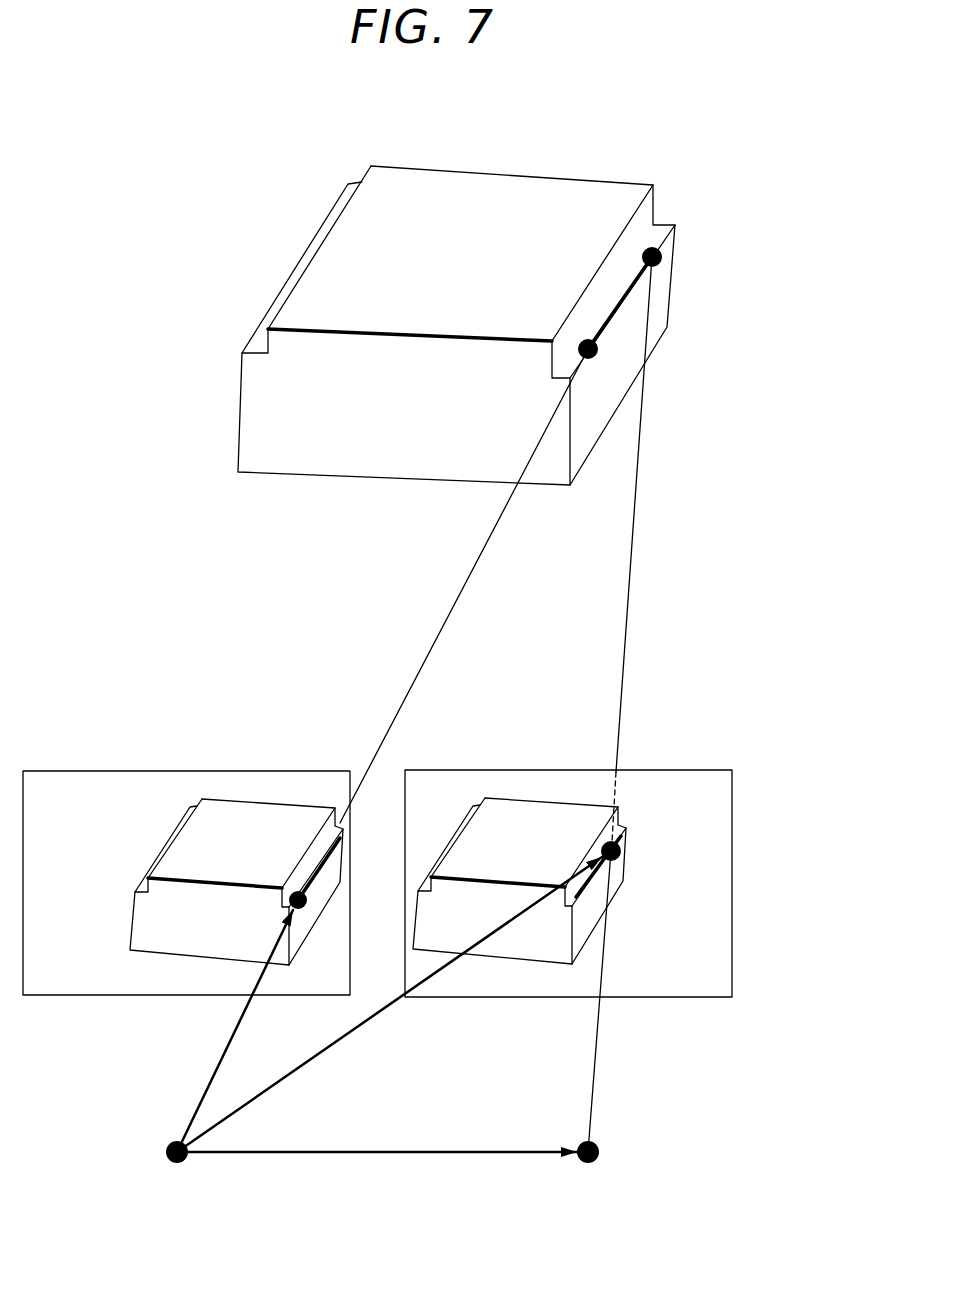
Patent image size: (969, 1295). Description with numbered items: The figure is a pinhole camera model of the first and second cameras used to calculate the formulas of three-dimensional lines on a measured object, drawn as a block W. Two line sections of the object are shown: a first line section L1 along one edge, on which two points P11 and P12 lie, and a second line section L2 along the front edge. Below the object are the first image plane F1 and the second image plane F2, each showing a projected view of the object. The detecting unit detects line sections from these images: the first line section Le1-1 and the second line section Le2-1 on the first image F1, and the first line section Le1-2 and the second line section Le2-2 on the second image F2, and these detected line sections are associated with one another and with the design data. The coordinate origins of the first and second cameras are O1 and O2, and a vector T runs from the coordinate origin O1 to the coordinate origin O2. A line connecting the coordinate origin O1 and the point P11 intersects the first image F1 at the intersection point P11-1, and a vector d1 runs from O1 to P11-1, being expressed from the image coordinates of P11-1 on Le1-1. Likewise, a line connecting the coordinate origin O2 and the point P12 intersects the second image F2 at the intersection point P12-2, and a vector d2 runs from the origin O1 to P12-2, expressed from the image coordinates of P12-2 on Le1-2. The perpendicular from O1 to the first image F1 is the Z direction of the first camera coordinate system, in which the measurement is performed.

The workpiece W is at (403, 147).
The first edge line of workpiece L1 is at (620, 312).
The second line section L2 is at (380, 333).
The point on the first line section P11 is at (596, 355).
The point on the first line section P12 is at (663, 258).
The first image F1 is at (70, 770).
The second image F2 is at (702, 770).
The first line section of the first image Le1-1 is at (312, 866).
The second line section of the first image Le2-1 is at (183, 875).
The first line section of the second image Le1-2 is at (582, 898).
The second line section of the second image Le2-2 is at (485, 875).
The intersection point P11-1 is at (303, 908).
The intersection point P12-2 is at (623, 850).
The vector d1 is at (212, 1073).
The vector d2 is at (378, 1018).
The vector T is at (375, 1157).
The coordinate origin of the first camera O1 is at (183, 1163).
The coordinate origin of the second camera O2 is at (597, 1165).